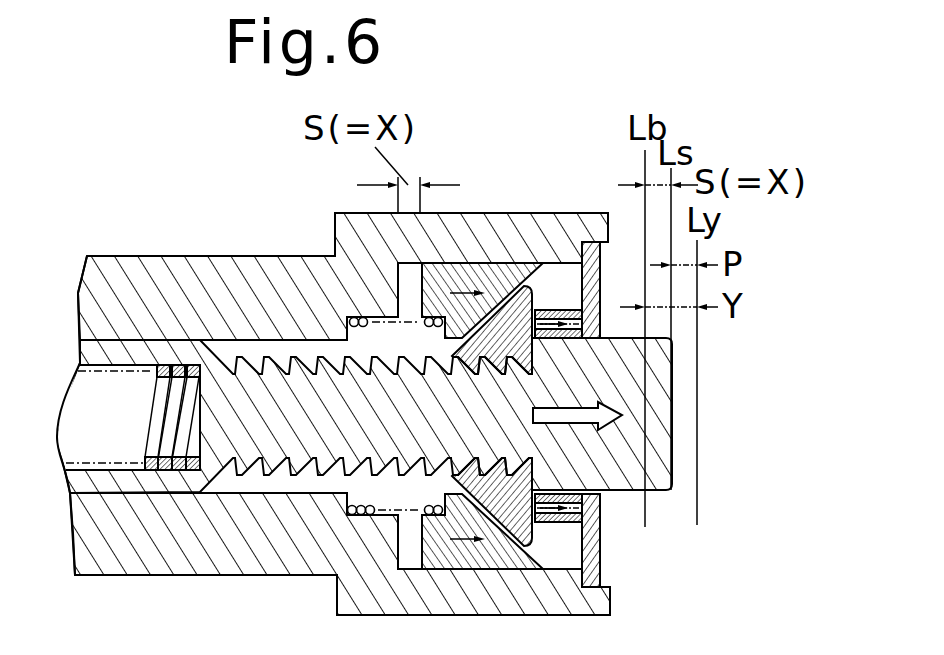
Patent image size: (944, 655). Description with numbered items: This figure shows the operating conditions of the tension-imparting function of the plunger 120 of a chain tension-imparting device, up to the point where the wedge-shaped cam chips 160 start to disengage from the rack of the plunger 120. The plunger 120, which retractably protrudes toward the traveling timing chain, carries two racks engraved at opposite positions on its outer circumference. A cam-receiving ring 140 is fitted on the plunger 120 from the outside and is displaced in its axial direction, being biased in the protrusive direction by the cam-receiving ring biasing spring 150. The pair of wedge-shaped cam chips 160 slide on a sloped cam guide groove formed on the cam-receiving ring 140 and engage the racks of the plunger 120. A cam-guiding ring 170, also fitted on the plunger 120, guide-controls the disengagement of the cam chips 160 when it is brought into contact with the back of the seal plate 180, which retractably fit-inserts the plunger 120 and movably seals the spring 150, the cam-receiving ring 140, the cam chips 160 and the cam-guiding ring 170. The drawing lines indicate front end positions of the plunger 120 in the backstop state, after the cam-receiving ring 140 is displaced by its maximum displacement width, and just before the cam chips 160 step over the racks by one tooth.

The plunger 120 is at (662, 480).
The cam-receiving ring 140 is at (453, 272).
The cam-receiving ring biasing spring 150 is at (346, 314).
The wedge-shaped cam chips 160 is at (506, 285).
The cam-guiding ring 170 is at (561, 315).
The seal plate 180 is at (602, 557).